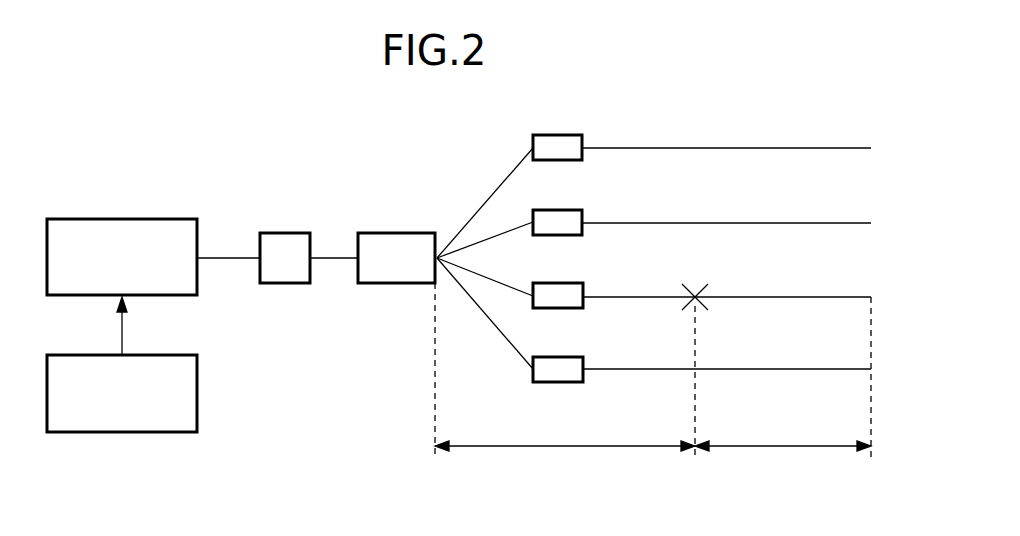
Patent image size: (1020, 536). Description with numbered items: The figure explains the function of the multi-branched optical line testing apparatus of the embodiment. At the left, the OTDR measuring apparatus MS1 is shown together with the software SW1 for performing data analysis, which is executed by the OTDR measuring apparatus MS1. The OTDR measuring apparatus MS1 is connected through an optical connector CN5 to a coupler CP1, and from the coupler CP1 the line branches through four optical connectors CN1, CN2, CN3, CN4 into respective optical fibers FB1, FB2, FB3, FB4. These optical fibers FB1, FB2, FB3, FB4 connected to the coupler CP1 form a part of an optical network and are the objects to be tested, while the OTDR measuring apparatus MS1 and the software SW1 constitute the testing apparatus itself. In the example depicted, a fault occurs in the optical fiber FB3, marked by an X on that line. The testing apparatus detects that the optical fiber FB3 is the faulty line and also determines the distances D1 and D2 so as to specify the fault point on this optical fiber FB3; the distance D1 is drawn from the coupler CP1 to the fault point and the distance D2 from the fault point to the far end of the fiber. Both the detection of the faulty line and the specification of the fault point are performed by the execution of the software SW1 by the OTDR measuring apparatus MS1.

The OTDR measuring apparatus MS1 is at (125, 219).
The software SW1 is at (122, 432).
The optical connector CN5 is at (283, 233).
The coupler CP1 is at (393, 233).
The optical connector CN1 is at (570, 135).
The optical connector CN2 is at (570, 210).
The optical connector CN3 is at (570, 283).
The optical connector CN4 is at (570, 357).
The optical fiber FB1 is at (773, 148).
The optical fiber FB2 is at (773, 223).
The optical fiber FB3 is at (773, 297).
The optical fiber FB4 is at (773, 369).
The distance D1 is at (565, 435).
The distance D2 is at (783, 435).